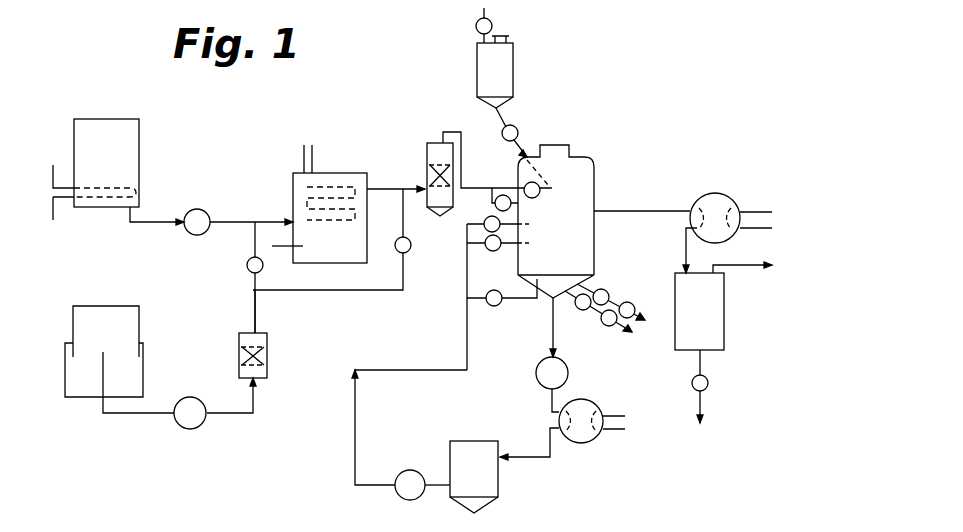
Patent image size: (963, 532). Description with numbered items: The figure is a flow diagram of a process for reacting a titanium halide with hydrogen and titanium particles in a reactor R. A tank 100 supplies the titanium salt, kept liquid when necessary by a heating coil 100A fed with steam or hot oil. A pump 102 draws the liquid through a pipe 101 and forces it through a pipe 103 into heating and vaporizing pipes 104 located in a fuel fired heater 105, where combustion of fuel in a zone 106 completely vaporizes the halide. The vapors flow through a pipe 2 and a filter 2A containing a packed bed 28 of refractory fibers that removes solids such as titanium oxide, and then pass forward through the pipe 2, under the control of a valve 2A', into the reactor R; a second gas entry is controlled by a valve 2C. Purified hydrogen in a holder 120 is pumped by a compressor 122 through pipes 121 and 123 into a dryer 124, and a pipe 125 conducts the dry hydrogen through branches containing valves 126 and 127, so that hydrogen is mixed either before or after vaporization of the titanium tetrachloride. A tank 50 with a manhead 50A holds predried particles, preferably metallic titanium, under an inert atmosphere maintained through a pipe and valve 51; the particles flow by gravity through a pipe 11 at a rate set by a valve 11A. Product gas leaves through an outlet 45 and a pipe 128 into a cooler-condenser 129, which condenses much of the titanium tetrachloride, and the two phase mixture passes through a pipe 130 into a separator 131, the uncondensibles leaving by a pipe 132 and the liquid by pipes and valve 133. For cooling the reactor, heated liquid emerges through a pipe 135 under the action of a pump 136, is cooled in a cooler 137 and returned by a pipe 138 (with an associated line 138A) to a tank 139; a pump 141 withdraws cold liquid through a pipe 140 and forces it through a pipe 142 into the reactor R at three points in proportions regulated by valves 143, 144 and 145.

The tank 100 is at (126, 159).
The heating coil 100A is at (63, 197).
The pipe 101 is at (149, 225).
The pump 102 is at (190, 208).
The pipe 103 is at (233, 219).
The heating and vaporizing pipes 104 is at (292, 191).
The fuel fired heater 105 is at (332, 172).
The combustion zone 106 is at (346, 257).
The pipe 2 is at (382, 188).
The packed bed 28 is at (427, 171).
The filter 2A is at (465, 145).
The valve 2A' is at (518, 176).
The valve 2C is at (494, 204).
The pipe 11 is at (522, 146).
The valve 11A is at (516, 127).
The tank 50 is at (513, 70).
The manhead 50A is at (509, 36).
The pipe and valve 51 is at (476, 25).
The reactor R is at (590, 162).
The product gas outlet 45 is at (618, 211).
The holder 120 is at (65, 373).
The pipe 121 is at (137, 415).
The compressor 122 is at (190, 429).
The pipe 123 is at (238, 414).
The dryer 124 is at (267, 358).
The pipe 125 is at (252, 311).
The valve 126 is at (246, 265).
The valve 127 is at (411, 251).
The pipe 128 is at (698, 204).
The cooler-condenser 129 is at (737, 200).
The pipe 130 is at (686, 241).
The separator 131 is at (724, 320).
The pipe 132 is at (740, 267).
The pipes and valve 133 is at (709, 386).
The pipe 135 is at (554, 336).
The pump 136 is at (537, 375).
The cooler 137 is at (591, 404).
The pipe 138 is at (528, 459).
The line 138A is at (252, 527).
The tank 139 is at (483, 441).
The pipe 140 is at (443, 497).
The pump 141 is at (402, 470).
The pipe 142 is at (437, 368).
The valve 143 is at (494, 307).
The valve 144 is at (495, 252).
The valve 145 is at (483, 226).